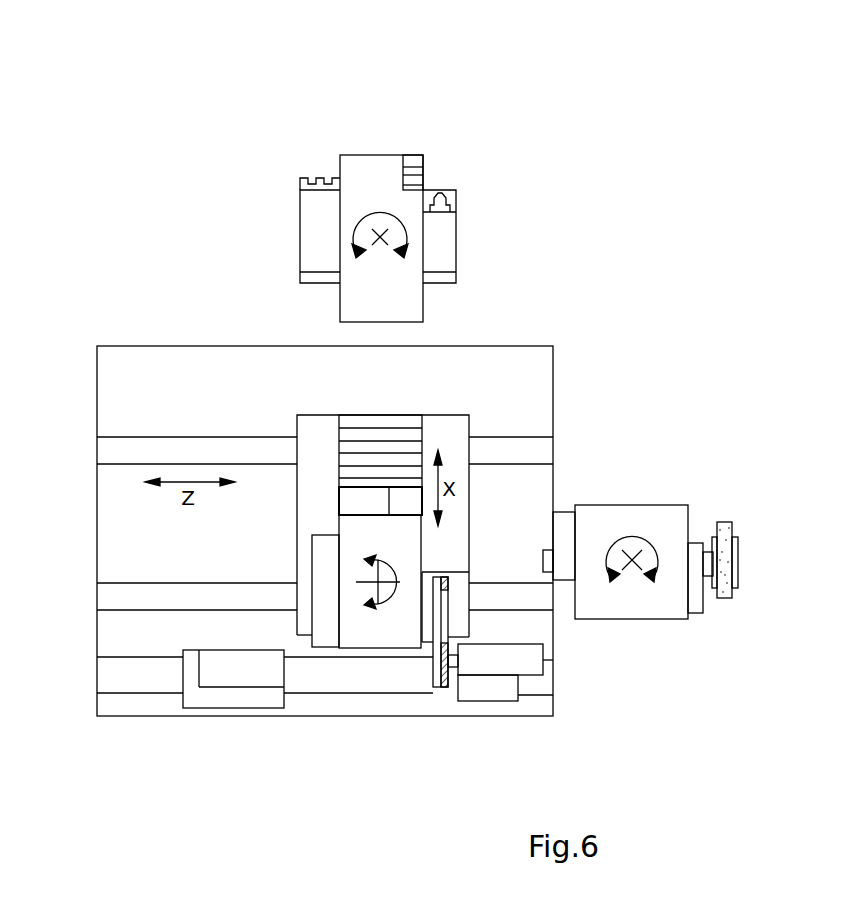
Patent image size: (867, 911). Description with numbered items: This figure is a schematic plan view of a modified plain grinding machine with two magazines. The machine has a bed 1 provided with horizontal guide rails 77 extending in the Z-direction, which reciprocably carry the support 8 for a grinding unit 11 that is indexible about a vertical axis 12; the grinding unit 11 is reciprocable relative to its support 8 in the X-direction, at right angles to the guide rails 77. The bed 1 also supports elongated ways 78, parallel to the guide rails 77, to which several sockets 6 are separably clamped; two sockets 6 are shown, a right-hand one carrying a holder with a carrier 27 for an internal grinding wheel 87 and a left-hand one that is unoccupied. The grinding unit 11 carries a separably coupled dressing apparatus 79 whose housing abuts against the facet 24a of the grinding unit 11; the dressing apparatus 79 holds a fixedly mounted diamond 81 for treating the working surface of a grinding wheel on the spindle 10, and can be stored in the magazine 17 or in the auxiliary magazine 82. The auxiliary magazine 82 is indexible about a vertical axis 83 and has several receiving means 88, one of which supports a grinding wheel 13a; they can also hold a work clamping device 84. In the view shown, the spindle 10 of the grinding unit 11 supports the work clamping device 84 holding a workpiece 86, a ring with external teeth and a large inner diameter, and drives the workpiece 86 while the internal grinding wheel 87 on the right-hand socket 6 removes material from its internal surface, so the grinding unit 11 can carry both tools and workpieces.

The bed 1 is at (118, 383).
The sockets 6 is at (223, 702).
The support 8 is at (458, 428).
The spindle 10 is at (427, 623).
The grinding unit 11 is at (352, 636).
The vertical axis 12 is at (378, 590).
The grinding wheel 13a is at (728, 522).
The magazine 17 is at (403, 118).
The facet 24a is at (358, 497).
The carrier 27 is at (532, 663).
The guide rails 77 is at (108, 597).
The ways 78 is at (112, 677).
The dressing apparatus 79 is at (389, 500).
The diamond 81 is at (332, 466).
The auxiliary magazine 82 is at (610, 520).
The vertical axis 83 is at (636, 558).
The work clamping device 84 is at (437, 670).
The workpiece 86 is at (447, 610).
The internal grinding wheel 87 is at (452, 668).
The receiving means 88 is at (545, 562).